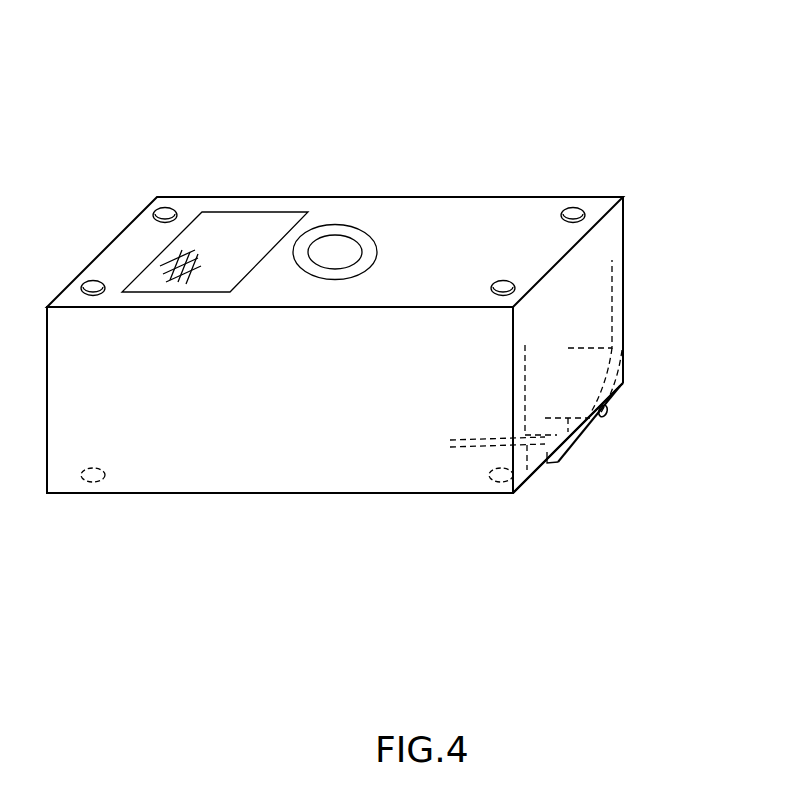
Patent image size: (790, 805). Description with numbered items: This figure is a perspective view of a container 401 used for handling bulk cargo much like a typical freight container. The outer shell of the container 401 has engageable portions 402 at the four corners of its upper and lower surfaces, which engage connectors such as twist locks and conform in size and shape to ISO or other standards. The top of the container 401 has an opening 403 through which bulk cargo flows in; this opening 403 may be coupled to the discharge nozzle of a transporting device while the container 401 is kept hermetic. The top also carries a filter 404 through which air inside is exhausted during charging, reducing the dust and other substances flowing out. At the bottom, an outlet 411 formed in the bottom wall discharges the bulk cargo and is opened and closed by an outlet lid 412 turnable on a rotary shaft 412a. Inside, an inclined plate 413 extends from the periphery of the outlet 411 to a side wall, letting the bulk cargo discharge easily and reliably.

The container 401 is at (583, 107).
The engageable portion 402 is at (573, 207).
The opening 403 is at (350, 263).
The filter 404 is at (242, 228).
The outlet 411 is at (573, 442).
The outlet lid 412 is at (590, 423).
The rotary shaft 412a is at (608, 411).
The inclined plate 413 is at (624, 383).